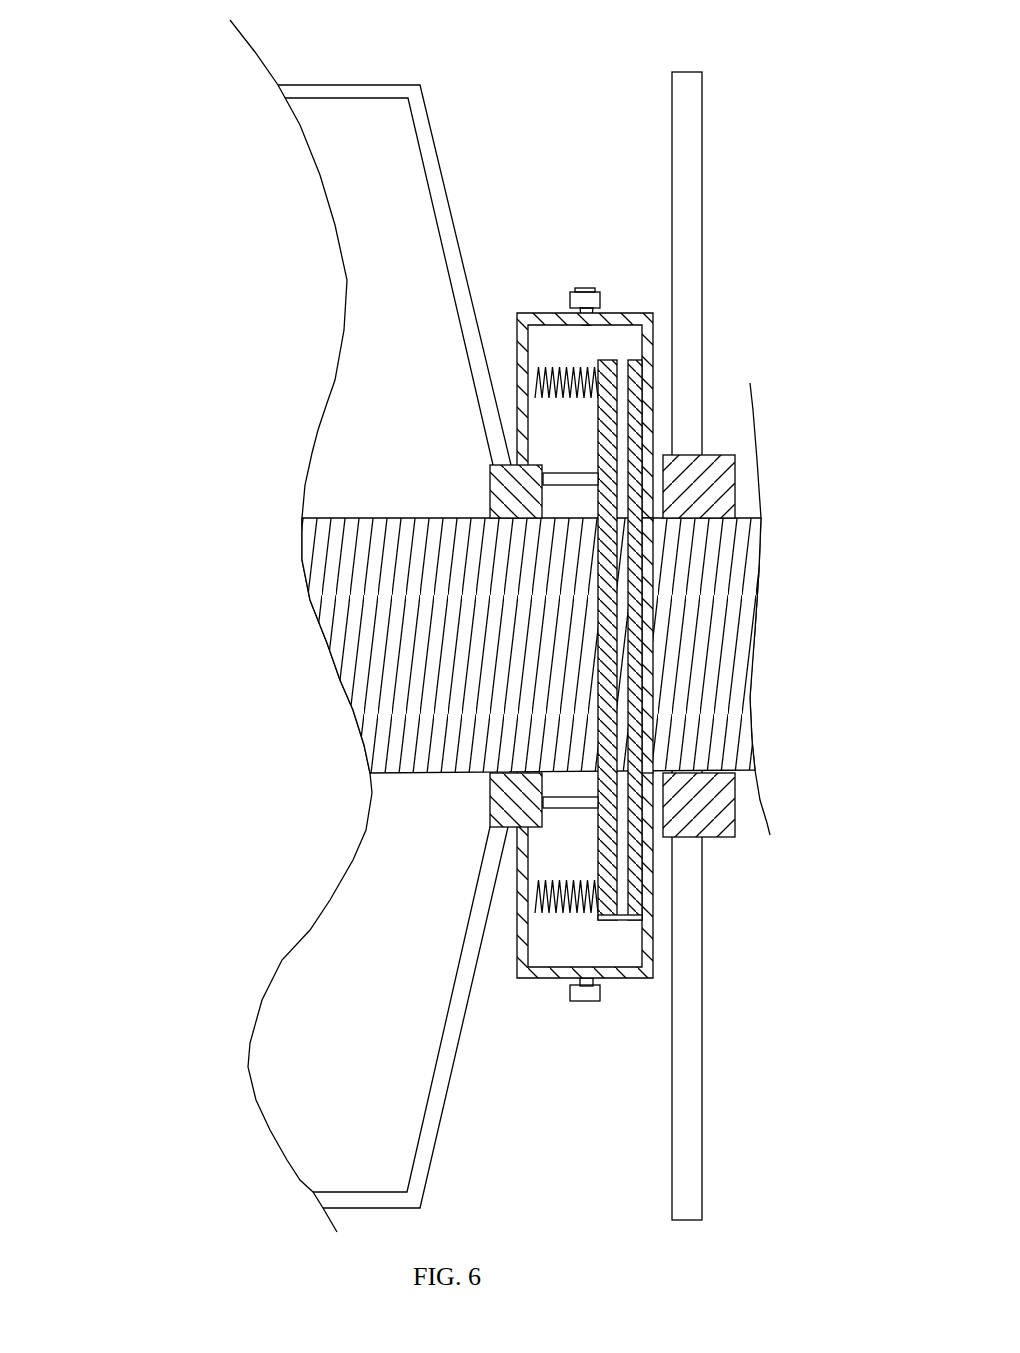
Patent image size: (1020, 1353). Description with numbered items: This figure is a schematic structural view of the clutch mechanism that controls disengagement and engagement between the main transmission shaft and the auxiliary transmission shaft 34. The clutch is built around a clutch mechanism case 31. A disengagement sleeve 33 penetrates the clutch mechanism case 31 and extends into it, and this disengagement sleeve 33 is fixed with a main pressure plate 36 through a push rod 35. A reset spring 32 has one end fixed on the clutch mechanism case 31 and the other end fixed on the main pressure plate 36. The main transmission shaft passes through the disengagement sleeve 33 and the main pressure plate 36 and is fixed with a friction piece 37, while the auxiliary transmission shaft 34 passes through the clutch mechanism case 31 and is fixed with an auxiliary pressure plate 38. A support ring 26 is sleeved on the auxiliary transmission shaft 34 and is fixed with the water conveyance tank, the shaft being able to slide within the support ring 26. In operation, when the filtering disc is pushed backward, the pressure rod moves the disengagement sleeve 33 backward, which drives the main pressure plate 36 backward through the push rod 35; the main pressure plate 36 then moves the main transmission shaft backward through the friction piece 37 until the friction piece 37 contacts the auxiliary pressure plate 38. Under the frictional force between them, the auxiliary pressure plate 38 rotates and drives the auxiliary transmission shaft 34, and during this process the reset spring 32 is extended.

The support ring 26 is at (688, 487).
The clutch mechanism case 31 is at (528, 317).
The reset spring 32 is at (552, 380).
The disengagement sleeve 33 is at (500, 485).
The auxiliary transmission shaft 34 is at (688, 593).
The push rod 35 is at (568, 803).
The main pressure plate 36 is at (602, 827).
The friction piece 37 is at (608, 858).
The auxiliary pressure plate 38 is at (635, 857).